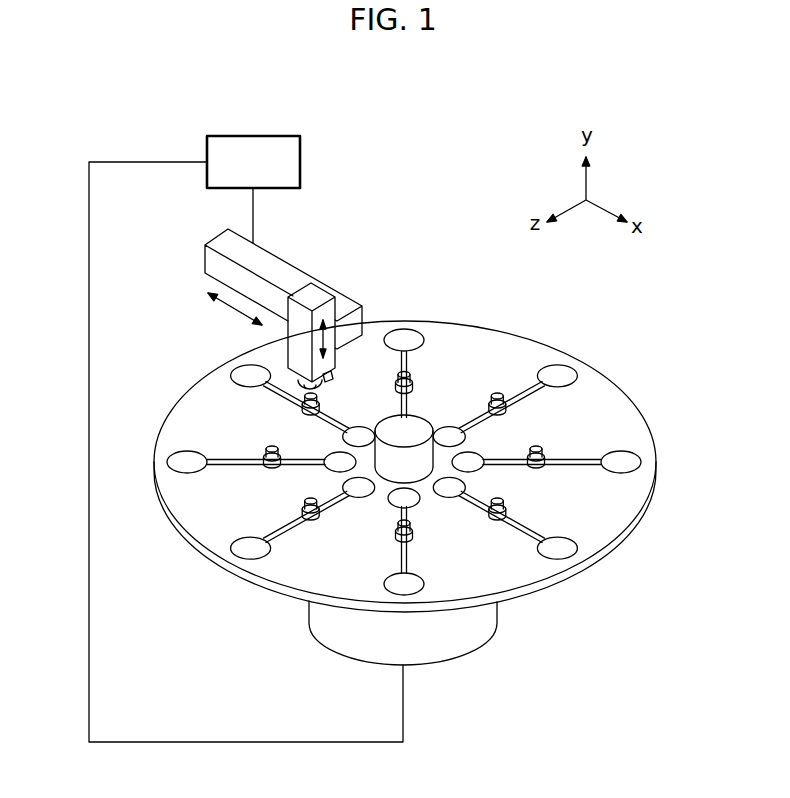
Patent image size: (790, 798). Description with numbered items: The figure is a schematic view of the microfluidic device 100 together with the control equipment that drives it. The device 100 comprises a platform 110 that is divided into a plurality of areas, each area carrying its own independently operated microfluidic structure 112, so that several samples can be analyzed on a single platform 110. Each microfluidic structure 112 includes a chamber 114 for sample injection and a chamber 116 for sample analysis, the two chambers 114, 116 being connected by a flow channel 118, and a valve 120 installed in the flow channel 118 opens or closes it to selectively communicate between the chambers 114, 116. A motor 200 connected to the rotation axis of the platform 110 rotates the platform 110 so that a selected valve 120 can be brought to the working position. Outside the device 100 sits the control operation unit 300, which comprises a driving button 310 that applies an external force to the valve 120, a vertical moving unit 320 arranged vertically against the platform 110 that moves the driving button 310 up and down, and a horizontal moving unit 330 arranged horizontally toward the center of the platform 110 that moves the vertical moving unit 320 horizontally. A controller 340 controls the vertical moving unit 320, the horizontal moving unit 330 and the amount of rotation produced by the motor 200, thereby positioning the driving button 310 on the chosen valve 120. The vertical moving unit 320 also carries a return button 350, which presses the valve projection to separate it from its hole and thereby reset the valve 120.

The microfluidic device 100 is at (425, 490).
The platform 110 is at (603, 395).
The microfluidic structure 112 is at (565, 600).
The chamber for sample injection 114 is at (447, 498).
The chamber for sample analysis 116 is at (560, 565).
The flow channel 118 is at (517, 535).
The valve 120 is at (510, 504).
The motor 200 is at (343, 638).
The control operation unit 300 is at (270, 308).
The driving button 310 is at (292, 390).
The vertical moving unit 320 is at (295, 347).
The horizontal moving unit 330 is at (273, 260).
The controller 340 is at (300, 162).
The return button 350 is at (337, 377).